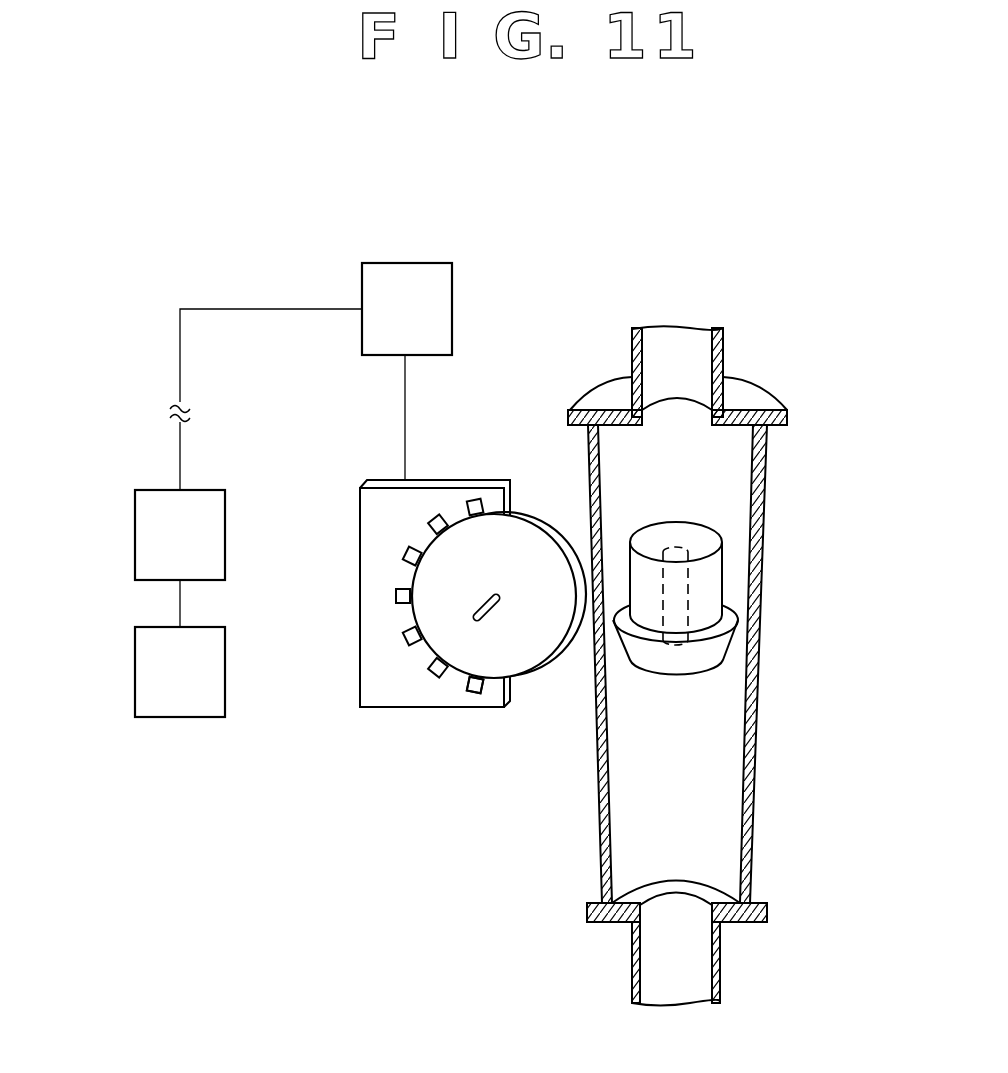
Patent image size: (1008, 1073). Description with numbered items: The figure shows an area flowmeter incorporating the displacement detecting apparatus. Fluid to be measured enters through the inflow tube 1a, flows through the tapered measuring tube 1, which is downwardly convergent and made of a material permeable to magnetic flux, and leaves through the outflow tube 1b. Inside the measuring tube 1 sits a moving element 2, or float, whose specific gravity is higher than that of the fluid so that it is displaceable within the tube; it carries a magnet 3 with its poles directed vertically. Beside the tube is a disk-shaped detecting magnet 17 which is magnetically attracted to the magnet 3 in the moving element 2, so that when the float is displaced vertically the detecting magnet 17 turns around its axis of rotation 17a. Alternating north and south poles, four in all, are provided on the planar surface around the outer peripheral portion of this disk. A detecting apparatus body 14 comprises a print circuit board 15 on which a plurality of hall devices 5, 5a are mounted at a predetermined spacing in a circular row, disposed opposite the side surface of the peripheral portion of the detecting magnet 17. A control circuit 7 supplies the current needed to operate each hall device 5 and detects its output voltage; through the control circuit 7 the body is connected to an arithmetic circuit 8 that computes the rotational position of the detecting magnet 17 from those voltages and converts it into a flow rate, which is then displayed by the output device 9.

The tapered measuring tube 1 is at (717, 657).
The inflow tube 1a is at (722, 962).
The outflow tube 1b is at (723, 335).
The moving element 2 is at (710, 582).
The magnet 3 is at (758, 647).
The hall devices 5 is at (455, 518).
The sensor element 5a is at (457, 687).
The control circuit 7 is at (388, 262).
The arithmetic circuit 8 is at (135, 538).
The output device 9 is at (135, 675).
The detecting apparatus body 14 is at (424, 581).
The print circuit board 15 is at (360, 642).
The detecting magnet 17 is at (530, 533).
The axis of rotation 17a is at (488, 614).